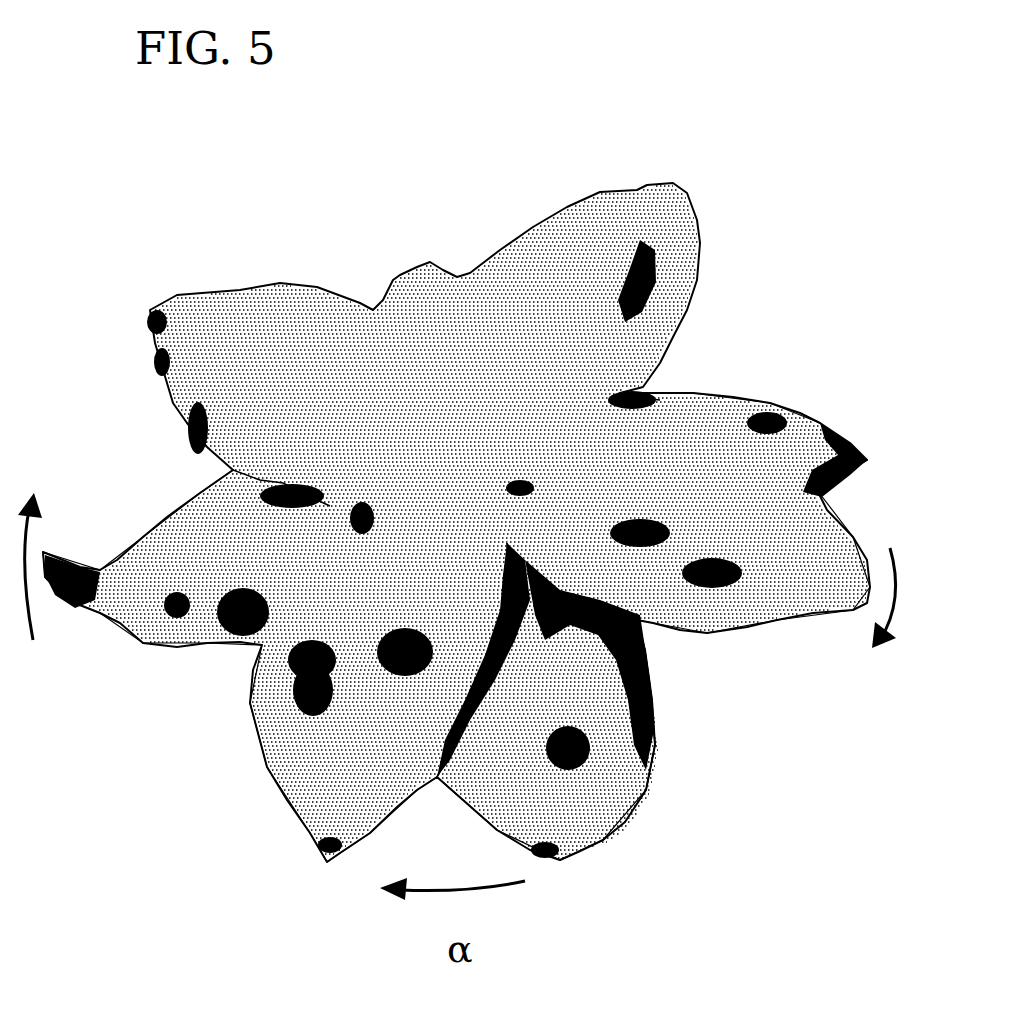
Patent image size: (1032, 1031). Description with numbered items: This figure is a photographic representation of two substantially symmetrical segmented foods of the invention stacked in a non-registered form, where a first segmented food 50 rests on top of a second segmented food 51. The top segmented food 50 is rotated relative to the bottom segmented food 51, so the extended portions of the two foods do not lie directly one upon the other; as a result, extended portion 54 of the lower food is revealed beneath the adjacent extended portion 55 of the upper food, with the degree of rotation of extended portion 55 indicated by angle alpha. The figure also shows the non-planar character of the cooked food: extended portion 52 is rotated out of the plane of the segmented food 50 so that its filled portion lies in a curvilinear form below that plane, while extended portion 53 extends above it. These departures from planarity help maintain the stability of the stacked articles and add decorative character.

The first segmented food 50 is at (730, 267).
The second segmented food 51 is at (692, 720).
The extended portion 52 is at (853, 540).
The extended portion 53 is at (160, 640).
The extended portion 54 is at (617, 808).
The extended portion 55 is at (278, 783).